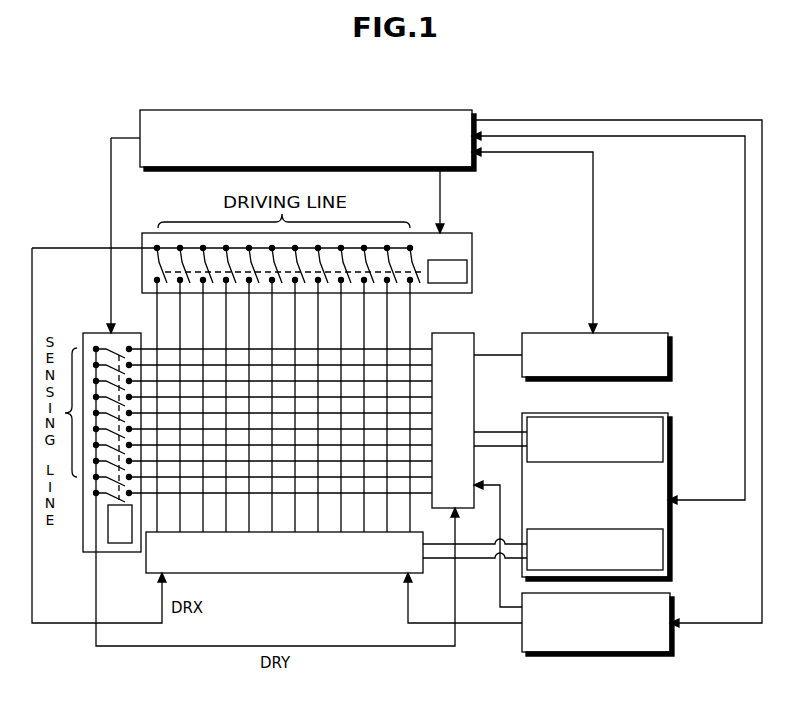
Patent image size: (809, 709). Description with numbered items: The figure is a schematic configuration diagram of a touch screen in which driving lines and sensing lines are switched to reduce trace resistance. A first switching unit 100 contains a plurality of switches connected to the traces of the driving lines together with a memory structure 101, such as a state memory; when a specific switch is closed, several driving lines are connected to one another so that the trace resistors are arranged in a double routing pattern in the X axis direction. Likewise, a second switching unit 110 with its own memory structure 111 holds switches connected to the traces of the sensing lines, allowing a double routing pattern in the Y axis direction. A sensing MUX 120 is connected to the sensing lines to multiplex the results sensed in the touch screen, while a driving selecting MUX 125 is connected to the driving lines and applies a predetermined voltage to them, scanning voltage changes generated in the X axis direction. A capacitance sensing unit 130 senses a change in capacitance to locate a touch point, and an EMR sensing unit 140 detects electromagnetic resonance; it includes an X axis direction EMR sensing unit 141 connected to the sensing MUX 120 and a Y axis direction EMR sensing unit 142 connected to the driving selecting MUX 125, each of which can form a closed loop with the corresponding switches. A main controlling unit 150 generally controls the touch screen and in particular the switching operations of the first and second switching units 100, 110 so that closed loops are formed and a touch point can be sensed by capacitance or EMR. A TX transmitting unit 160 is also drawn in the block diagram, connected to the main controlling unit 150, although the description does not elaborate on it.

The first switching unit 100 is at (463, 232).
The memory structure 101 is at (462, 272).
The second switching unit 110 is at (98, 330).
The memory structure 111 is at (122, 538).
The sensing multiplexer 120 is at (476, 333).
The driving selecting MUX 125 is at (283, 574).
The capacitance sensing unit 130 is at (670, 352).
The electromagnetic resonance sensing unit 140 is at (672, 470).
The X axis direction EMR sensing unit 141 is at (664, 432).
The Y axis direction EMR sensing unit 142 is at (663, 545).
The main controlling unit 150 is at (405, 108).
The TX transmitting unit 160 is at (597, 656).